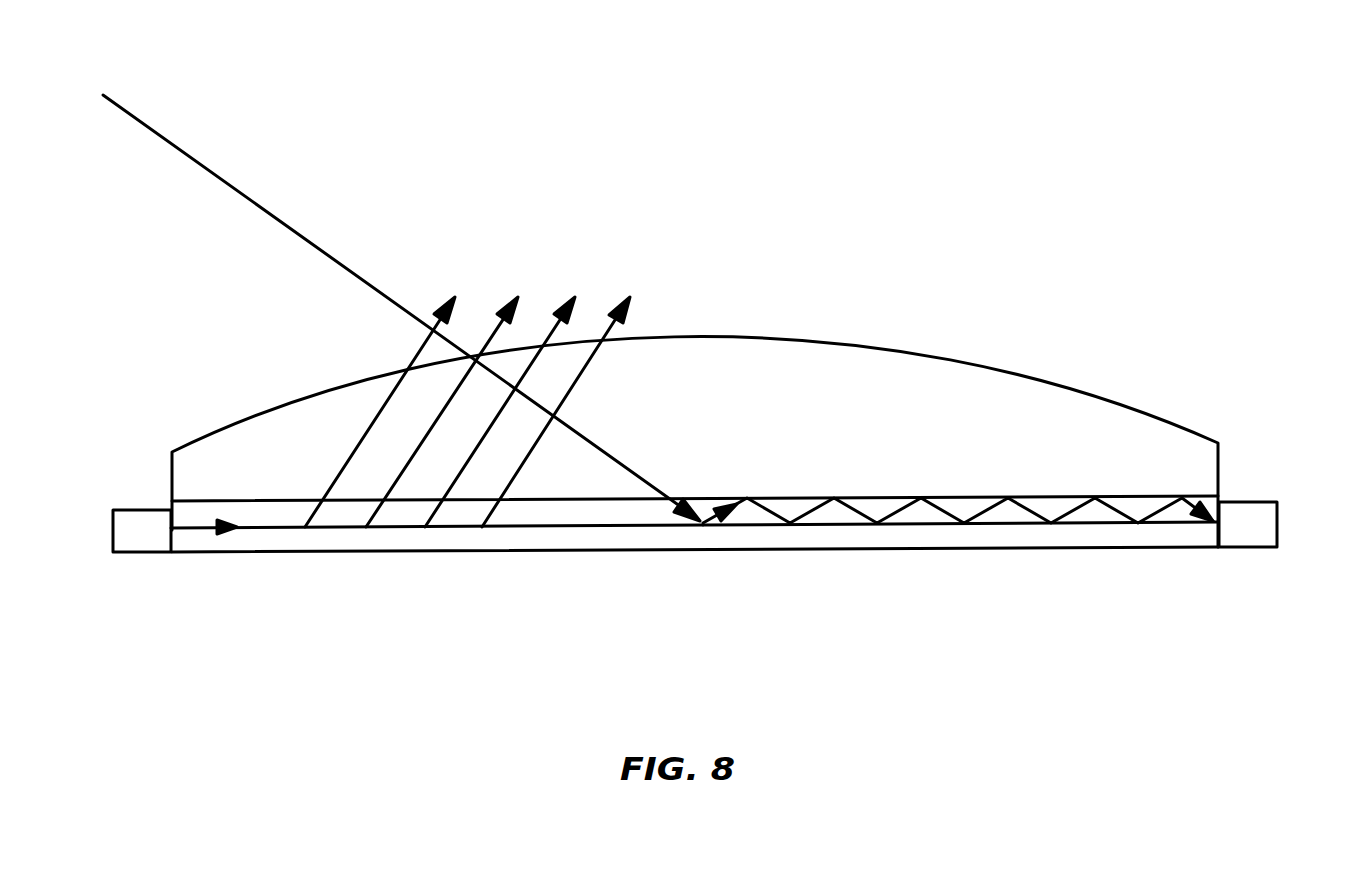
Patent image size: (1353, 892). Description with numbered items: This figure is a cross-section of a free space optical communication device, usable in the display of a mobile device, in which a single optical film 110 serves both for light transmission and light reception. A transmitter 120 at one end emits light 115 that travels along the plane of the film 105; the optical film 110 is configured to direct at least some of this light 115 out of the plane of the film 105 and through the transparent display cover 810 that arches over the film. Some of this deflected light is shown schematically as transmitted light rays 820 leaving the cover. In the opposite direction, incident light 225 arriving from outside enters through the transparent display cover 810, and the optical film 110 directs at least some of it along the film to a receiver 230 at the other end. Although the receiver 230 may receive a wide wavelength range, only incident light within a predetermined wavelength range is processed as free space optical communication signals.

The film 105 is at (606, 560).
The optical film 110 is at (425, 527).
The light from transmitter 115 is at (227, 533).
The transmitter 120 is at (148, 535).
The incident light 225 is at (280, 218).
The receiver 230 is at (1238, 520).
The transparent display cover 810 is at (783, 377).
The transmitted light rays 820 is at (643, 270).